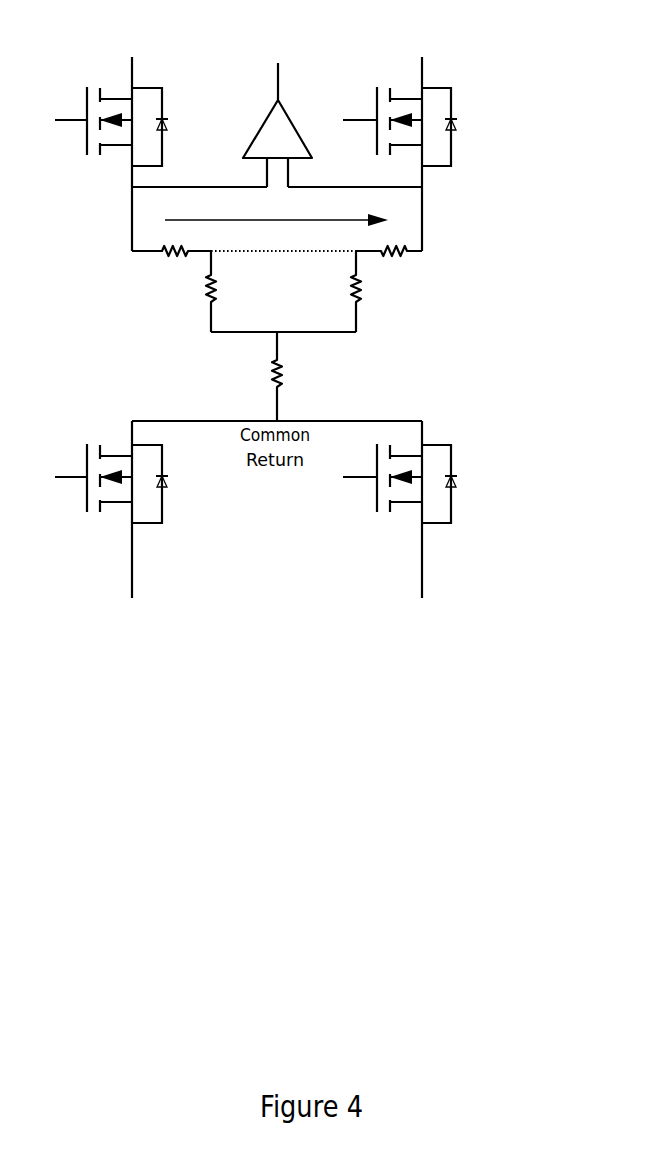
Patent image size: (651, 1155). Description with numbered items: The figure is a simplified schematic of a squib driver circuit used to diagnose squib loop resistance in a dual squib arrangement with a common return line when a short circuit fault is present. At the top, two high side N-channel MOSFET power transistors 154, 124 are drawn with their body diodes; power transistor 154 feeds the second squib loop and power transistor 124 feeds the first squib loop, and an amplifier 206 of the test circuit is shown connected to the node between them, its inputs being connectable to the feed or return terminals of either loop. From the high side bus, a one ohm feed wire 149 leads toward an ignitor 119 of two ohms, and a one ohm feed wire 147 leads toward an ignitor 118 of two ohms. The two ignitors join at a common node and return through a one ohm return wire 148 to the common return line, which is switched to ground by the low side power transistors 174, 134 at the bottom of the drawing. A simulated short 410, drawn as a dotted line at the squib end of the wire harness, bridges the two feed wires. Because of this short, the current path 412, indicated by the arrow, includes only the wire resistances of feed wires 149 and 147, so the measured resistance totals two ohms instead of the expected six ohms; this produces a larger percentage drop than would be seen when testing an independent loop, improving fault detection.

The power transistor 154 is at (120, 98).
The power transistor 124 is at (408, 98).
The amplifier 206 is at (277, 125).
The current path 412 is at (256, 214).
The simulated short 410 is at (256, 248).
The feed wire 149 is at (167, 259).
The feed wire 147 is at (395, 259).
The ignitor 119 is at (217, 298).
The ignitor 118 is at (352, 295).
The return wire 148 is at (275, 363).
The power transistor 174 is at (121, 503).
The power transistor 134 is at (408, 503).